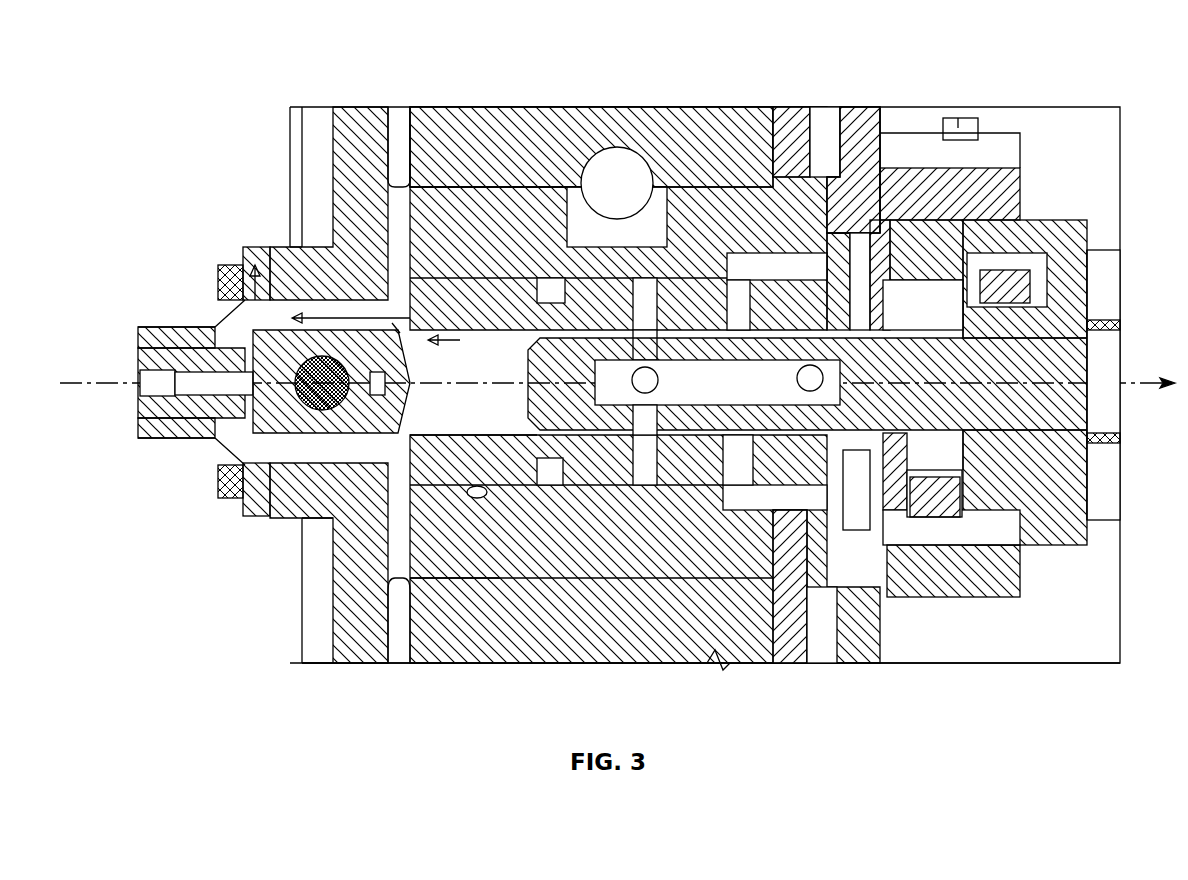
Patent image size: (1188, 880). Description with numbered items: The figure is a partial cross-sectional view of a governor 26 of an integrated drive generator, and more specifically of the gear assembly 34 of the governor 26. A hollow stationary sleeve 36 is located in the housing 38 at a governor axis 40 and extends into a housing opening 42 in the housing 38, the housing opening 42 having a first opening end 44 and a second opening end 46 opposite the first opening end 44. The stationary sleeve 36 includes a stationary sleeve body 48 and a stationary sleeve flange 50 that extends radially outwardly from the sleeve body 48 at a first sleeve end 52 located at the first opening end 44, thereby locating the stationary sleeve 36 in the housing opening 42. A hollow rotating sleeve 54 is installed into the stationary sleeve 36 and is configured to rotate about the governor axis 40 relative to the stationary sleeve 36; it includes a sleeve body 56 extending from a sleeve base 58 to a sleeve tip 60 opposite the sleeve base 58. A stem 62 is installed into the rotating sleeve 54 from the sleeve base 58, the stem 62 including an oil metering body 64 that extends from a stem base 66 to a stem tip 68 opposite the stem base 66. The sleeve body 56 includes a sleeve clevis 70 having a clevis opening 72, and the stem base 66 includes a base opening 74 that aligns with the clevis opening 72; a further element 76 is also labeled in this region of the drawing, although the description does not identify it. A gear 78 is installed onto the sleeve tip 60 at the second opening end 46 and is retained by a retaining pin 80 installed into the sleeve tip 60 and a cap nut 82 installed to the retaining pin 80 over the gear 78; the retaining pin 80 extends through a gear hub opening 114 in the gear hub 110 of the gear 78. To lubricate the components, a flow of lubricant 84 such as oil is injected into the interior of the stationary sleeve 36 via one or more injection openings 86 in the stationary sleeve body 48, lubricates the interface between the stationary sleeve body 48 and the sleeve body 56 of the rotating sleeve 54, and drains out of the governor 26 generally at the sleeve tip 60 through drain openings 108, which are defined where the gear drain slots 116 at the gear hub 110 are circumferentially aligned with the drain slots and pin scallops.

The governor 26 is at (175, 82).
The gear assembly 34 is at (514, 682).
The stationary sleeve 36 is at (475, 205).
The housing 38 is at (560, 130).
The governor axis 40 is at (145, 372).
The housing opening 42 is at (420, 180).
The first opening end 44 is at (800, 200).
The second opening end 46 is at (400, 173).
The stationary sleeve body 48 is at (634, 549).
The stationary sleeve flange 50 is at (790, 620).
The first sleeve end 52 is at (855, 170).
The rotating sleeve 54 is at (450, 455).
The sleeve body 56 is at (612, 600).
The sleeve base 58 is at (915, 578).
The sleeve tip 60 is at (257, 485).
The stem 62 is at (1118, 440).
The oil metering body 64 is at (700, 330).
The stem base 66 is at (1020, 235).
The stem tip 68 is at (535, 380).
The sleeve clevis 70 is at (1010, 140).
The clevis opening 72 is at (975, 122).
The base opening 74 is at (948, 330).
The screw 76 is at (955, 118).
The gear 78 is at (340, 612).
The retaining pin 80 is at (180, 425).
The cap nut 82 is at (172, 327).
The flow of lubricant 84 is at (245, 283).
The injection openings 86 is at (482, 488).
The drain openings 108 is at (275, 440).
The gear hub 110 is at (262, 265).
The gear hub opening 114 is at (300, 290).
The gear drain slots 116 is at (232, 268).